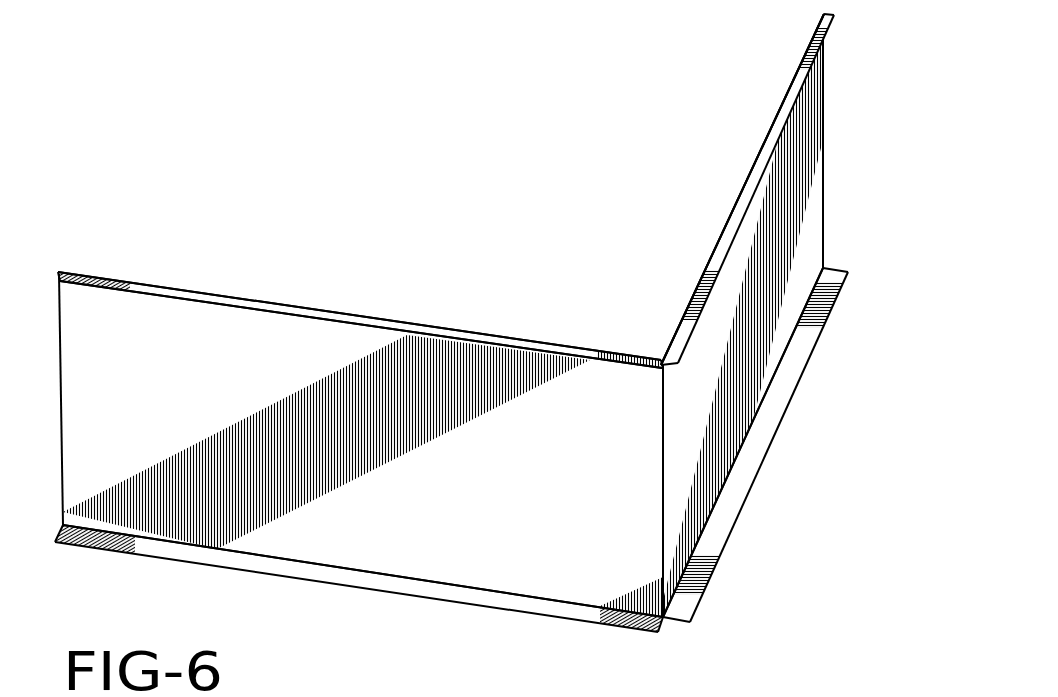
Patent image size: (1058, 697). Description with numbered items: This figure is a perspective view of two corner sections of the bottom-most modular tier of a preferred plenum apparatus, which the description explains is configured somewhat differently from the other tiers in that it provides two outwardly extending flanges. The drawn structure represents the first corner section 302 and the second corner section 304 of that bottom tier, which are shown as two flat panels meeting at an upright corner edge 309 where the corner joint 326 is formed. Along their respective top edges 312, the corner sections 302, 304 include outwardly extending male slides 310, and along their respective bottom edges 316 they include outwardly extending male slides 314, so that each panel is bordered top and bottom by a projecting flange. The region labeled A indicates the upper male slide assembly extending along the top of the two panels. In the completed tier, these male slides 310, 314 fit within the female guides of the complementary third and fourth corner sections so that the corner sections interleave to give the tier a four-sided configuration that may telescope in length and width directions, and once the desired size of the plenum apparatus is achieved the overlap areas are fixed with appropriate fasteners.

The first corner section 302 is at (466, 348).
The second corner section 304 is at (637, 538).
The vertical corner edge 309 is at (663, 454).
The male slide 310 is at (232, 303).
The top edge 312 is at (428, 327).
The male slide 314 is at (488, 601).
The bottom edge 316 is at (410, 577).
The corner joint 326 is at (670, 352).
The panel assembly A is at (736, 177).